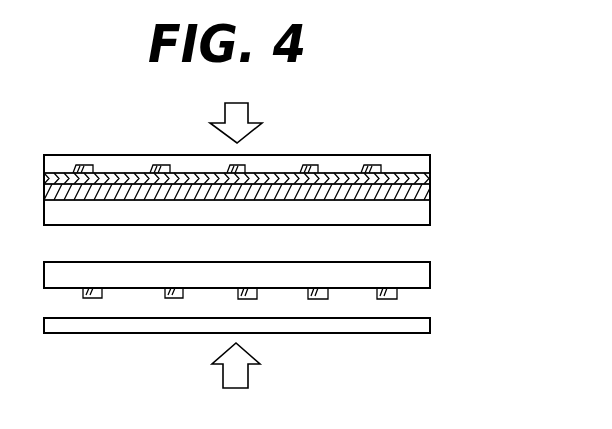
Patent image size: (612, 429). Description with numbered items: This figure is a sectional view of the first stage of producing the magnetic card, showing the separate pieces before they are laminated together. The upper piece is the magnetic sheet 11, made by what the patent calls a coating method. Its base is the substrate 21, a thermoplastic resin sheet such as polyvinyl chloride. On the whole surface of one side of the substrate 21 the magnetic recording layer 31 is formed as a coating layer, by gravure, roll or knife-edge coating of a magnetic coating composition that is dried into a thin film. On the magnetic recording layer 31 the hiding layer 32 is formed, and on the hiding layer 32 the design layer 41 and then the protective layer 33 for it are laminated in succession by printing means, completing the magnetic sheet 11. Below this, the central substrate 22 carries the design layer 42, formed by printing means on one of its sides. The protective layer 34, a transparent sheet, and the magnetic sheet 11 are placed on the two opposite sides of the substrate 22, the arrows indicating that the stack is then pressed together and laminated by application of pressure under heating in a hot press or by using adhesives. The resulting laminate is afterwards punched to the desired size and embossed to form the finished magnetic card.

The magnetic sheet 11 is at (552, 145).
The substrate 21 is at (420, 212).
The substrate 22 is at (418, 275).
The magnetic recording layer 31 is at (430, 192).
The hiding layer 32 is at (430, 178).
The protective layer 33 is at (420, 165).
The protective layer 34 is at (420, 327).
The design layer 41 is at (372, 165).
The design layer 42 is at (386, 300).